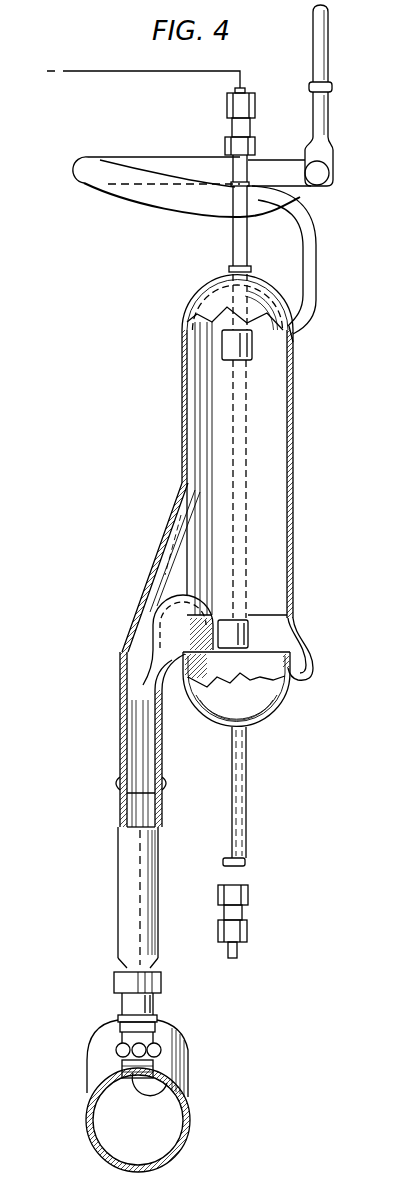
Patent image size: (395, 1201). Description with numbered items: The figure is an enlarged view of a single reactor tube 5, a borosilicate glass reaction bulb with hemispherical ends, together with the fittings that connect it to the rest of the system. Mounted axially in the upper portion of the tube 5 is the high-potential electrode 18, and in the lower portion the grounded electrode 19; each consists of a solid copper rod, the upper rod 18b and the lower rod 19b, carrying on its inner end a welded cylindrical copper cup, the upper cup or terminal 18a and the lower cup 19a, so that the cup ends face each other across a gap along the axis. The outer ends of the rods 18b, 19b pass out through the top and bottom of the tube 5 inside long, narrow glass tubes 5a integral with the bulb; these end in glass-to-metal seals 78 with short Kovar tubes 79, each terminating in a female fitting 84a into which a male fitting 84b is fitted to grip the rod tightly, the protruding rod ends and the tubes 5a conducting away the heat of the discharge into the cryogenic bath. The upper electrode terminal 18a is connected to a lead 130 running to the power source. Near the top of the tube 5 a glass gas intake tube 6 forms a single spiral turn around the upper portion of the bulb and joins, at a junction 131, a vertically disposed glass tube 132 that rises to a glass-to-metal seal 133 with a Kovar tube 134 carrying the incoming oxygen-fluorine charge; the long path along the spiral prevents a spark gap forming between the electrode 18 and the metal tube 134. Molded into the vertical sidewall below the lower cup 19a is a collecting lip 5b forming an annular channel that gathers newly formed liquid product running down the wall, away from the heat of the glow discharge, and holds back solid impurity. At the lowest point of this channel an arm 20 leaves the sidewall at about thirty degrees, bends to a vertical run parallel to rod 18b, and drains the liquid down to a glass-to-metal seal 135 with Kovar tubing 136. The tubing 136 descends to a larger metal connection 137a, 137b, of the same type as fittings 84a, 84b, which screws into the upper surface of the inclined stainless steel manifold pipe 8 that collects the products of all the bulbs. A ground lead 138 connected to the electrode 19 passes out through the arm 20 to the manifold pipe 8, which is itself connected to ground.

The reactor tube 5 is at (293, 437).
The Pyrex tubes 5a is at (233, 240).
The lip 5b is at (310, 645).
The gas intake tube 6 is at (123, 197).
The manifold pipe 8 is at (190, 1075).
The high-potential electrode 18 is at (218, 341).
The upper electrode cup 18a is at (248, 348).
The upper electrode rod 18b is at (247, 88).
The grounded electrode 19 is at (232, 612).
The lower electrode cup 19a is at (263, 616).
The lower electrode rod 19b is at (242, 668).
The arm 20 is at (120, 713).
The glass-to-metal seals 78 is at (274, 187).
The Kovar tubes 79 is at (233, 170).
The female fitting 84a is at (252, 147).
The male fitting 84b is at (228, 102).
The lead 130 is at (82, 72).
The junction 131 is at (322, 175).
The vertical glass tube 132 is at (320, 112).
The glass-to-metal seal 133 is at (328, 86).
The Kovar tube 134 is at (320, 50).
The glass-to-metal seal 135 is at (118, 783).
The Kovar tubing 136 is at (122, 878).
The metal connection 137a is at (116, 987).
The metal connection 137b is at (116, 1048).
The ground lead 138 is at (152, 632).